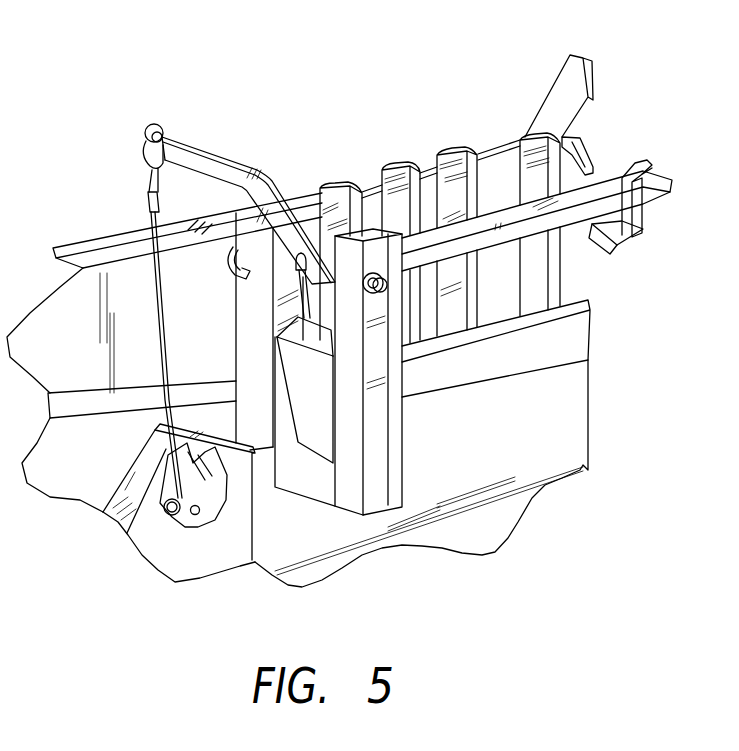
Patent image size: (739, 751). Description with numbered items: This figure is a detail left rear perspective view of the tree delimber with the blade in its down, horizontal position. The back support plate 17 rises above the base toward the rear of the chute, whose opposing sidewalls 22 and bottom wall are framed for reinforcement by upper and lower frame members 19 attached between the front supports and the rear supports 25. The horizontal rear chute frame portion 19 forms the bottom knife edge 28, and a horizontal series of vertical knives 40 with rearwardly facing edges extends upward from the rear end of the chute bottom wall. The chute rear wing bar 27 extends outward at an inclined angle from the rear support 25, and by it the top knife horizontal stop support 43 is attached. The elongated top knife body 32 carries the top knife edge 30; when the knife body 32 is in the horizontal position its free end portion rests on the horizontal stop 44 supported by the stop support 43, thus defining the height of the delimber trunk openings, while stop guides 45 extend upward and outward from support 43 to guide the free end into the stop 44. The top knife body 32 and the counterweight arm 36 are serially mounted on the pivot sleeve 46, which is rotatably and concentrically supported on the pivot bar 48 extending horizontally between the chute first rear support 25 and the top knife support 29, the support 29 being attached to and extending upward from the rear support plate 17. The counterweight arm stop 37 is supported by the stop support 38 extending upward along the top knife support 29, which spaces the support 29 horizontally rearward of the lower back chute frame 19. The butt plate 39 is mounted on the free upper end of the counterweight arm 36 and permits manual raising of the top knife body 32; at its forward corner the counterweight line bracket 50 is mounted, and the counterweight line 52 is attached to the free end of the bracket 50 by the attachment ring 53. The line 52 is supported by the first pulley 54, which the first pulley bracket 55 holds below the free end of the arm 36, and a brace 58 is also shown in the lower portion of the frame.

The base plate 17 is at (524, 457).
The side rail 19 is at (112, 230).
The side frame 22 is at (78, 378).
The support column 25 is at (247, 387).
The stop bar 27 is at (577, 65).
The cross bar 28 is at (507, 340).
The upright post 29 is at (380, 453).
The guide rail 30 is at (617, 173).
The lower cross member 32 is at (499, 245).
The lever arm 36 is at (268, 190).
The mounting plate 37 is at (283, 320).
The hanging plate 38 is at (328, 410).
The arm bend 39 is at (207, 160).
The guide posts 40 is at (343, 187).
The wedge 43 is at (587, 232).
The clamp block 44 is at (618, 248).
The clamp hooks 45 is at (588, 153).
The pivot pin 46 is at (300, 270).
The bolt 48 is at (383, 297).
The arm end connector 50 is at (166, 136).
The cable 52 is at (155, 287).
The hook 53 is at (140, 151).
The clevis 54 is at (168, 515).
The mounting block 55 is at (245, 540).
The brace 58 is at (147, 460).